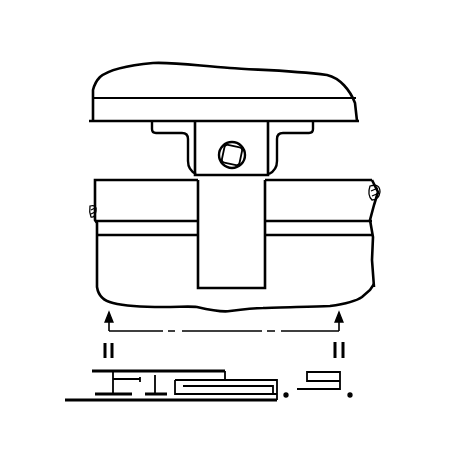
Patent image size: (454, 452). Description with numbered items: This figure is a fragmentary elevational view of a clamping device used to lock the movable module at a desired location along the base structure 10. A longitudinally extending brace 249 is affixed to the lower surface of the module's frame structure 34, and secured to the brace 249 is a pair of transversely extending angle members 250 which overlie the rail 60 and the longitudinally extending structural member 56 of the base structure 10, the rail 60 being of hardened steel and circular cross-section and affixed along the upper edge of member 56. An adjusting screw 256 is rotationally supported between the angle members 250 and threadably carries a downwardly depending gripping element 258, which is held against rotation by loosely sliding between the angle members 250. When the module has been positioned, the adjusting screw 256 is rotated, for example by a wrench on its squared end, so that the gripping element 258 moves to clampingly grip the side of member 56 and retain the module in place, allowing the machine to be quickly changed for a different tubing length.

The frame structure 34 is at (234, 73).
The brace 249 is at (187, 108).
The adjusting screw 256 is at (242, 143).
The angle members 250 is at (187, 133).
The gripping element 258 is at (243, 221).
The rail 60 is at (377, 183).
The structural member 56 is at (326, 276).
The base structure 10 is at (224, 335).